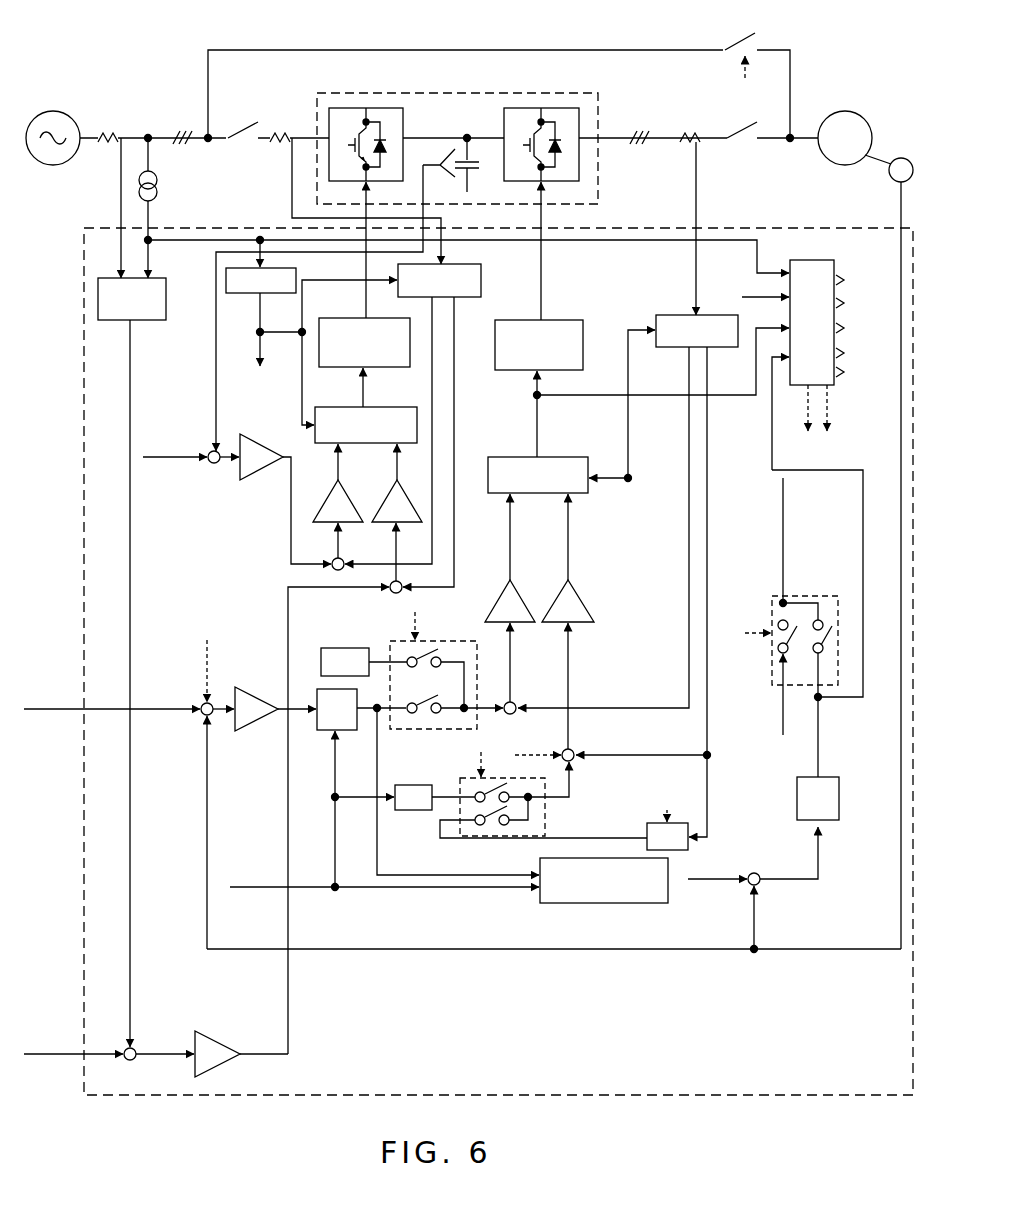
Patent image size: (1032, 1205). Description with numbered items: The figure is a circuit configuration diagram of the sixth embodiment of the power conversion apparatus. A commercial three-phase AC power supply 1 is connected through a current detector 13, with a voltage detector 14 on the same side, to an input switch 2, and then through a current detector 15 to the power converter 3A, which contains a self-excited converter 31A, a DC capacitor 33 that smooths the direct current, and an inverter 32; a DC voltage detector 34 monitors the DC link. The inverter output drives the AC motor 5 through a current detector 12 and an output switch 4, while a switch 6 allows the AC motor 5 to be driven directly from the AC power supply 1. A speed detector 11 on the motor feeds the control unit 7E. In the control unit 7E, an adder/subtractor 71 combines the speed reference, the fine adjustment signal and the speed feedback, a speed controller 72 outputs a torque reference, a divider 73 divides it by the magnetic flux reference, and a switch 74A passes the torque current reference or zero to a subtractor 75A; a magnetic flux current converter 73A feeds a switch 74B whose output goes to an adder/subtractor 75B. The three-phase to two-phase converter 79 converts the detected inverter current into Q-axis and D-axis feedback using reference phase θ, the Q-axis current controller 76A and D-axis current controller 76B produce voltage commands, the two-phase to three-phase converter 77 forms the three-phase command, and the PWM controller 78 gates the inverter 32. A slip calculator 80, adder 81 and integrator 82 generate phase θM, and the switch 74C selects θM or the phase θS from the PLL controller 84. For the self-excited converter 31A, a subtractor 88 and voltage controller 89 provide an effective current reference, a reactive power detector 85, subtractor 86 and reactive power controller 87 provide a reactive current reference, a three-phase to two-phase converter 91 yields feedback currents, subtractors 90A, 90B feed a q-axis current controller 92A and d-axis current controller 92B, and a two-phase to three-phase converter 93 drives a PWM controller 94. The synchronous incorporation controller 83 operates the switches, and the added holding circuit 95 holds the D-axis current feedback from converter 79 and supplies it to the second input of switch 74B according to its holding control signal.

The AC power supply 1 is at (62, 111).
The current detector 13 is at (110, 132).
The voltage detector 14 is at (160, 180).
The input switch 2 is at (246, 126).
The current detector 15 is at (275, 130).
The power converter 3A is at (440, 95).
The self-excited converter 31A is at (405, 125).
The inverter 32 is at (501, 125).
The DC capacitor 33 is at (472, 175).
The DC voltage detector 34 is at (335, 293).
The current detector 12 is at (687, 131).
The output switch 4 is at (743, 127).
The switch 6 is at (732, 41).
The AC motor 5 is at (858, 112).
The speed detector 11 is at (903, 155).
The control unit 7E is at (638, 224).
The reactive power detector 85 is at (158, 276).
The PLL controller 84 is at (268, 296).
The 3-phase to 2-phase converter 91 is at (482, 269).
The PWM controller 94 is at (349, 314).
The 2-phase to 3-phase converter 93 is at (380, 405).
The subtractor 88 is at (210, 448).
The voltage controller 89 is at (262, 438).
The subtractor 90A is at (344, 556).
The subtractor 90B is at (386, 592).
The q-axis current controller 92A is at (321, 504).
The d-axis current controller 92B is at (381, 504).
The PWM controller 78 is at (552, 318).
The 2-phase to 3-phase converter 77 is at (556, 457).
The 3-phase to 2-phase converter 79 is at (659, 314).
The synchronous incorporation controller 83 is at (834, 270).
The Q-axis current controller 76A is at (514, 593).
The D-axis current controller 76B is at (585, 593).
The subtractor 75A is at (515, 702).
The adder/subtractor 75B is at (573, 765).
The adder/subtractor 71 is at (200, 686).
The speed controller 72 is at (248, 686).
The divider 73 is at (319, 690).
The switch 74A is at (432, 638).
The magnetic flux current converter 73A is at (408, 783).
The switch 74B is at (548, 822).
The holding circuit 95 is at (688, 850).
The slip calculator 80 is at (546, 909).
The adder 81 is at (762, 874).
The integrator 82 is at (828, 777).
The switch 74C is at (800, 594).
The subtractor 86 is at (140, 1047).
The reactive power controller 87 is at (215, 1038).